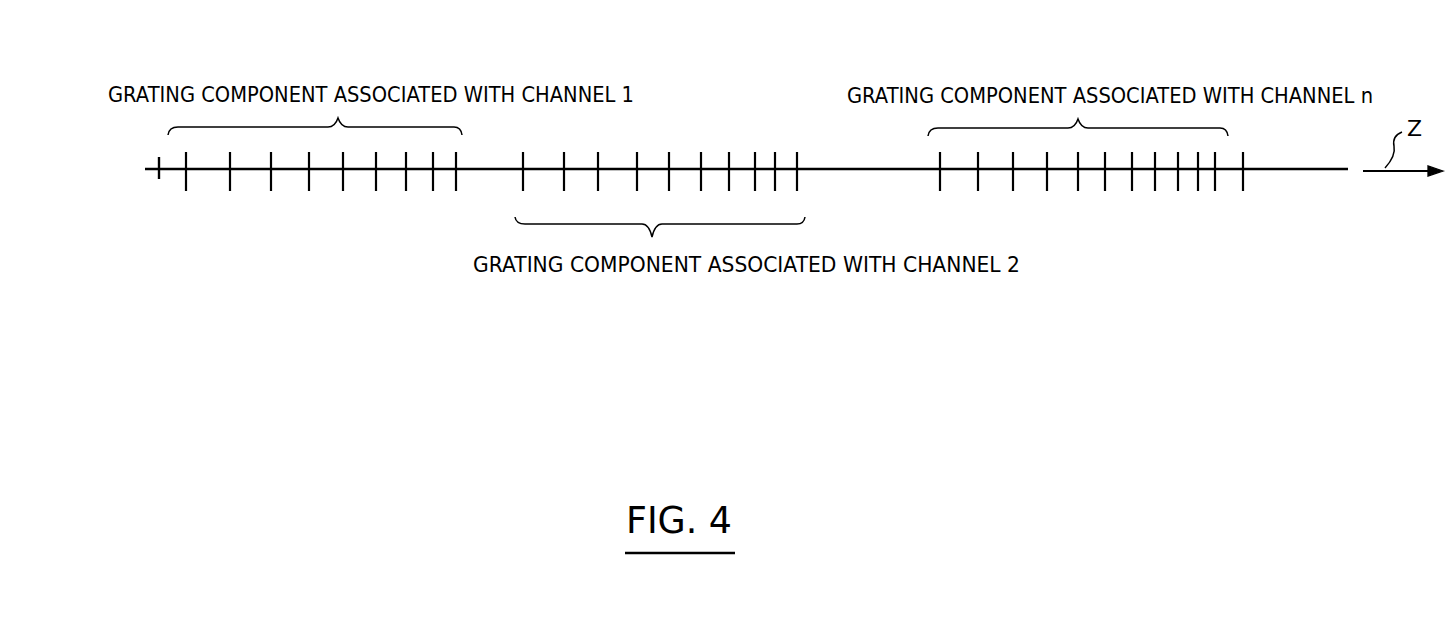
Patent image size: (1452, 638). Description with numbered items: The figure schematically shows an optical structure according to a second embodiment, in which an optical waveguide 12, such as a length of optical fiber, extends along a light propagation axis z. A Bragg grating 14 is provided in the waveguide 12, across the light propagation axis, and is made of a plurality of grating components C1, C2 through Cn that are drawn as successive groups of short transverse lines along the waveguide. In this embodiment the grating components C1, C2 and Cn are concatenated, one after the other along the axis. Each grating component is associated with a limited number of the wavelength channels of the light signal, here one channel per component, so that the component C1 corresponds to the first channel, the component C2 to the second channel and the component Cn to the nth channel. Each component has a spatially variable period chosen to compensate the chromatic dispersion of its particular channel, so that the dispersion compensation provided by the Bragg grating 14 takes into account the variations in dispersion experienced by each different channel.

The optical waveguide 12 is at (1327, 171).
The Bragg grating 14 is at (171, 184).
The grating component C1 is at (287, 200).
The grating component C2 is at (686, 147).
The grating component Cn is at (1092, 197).